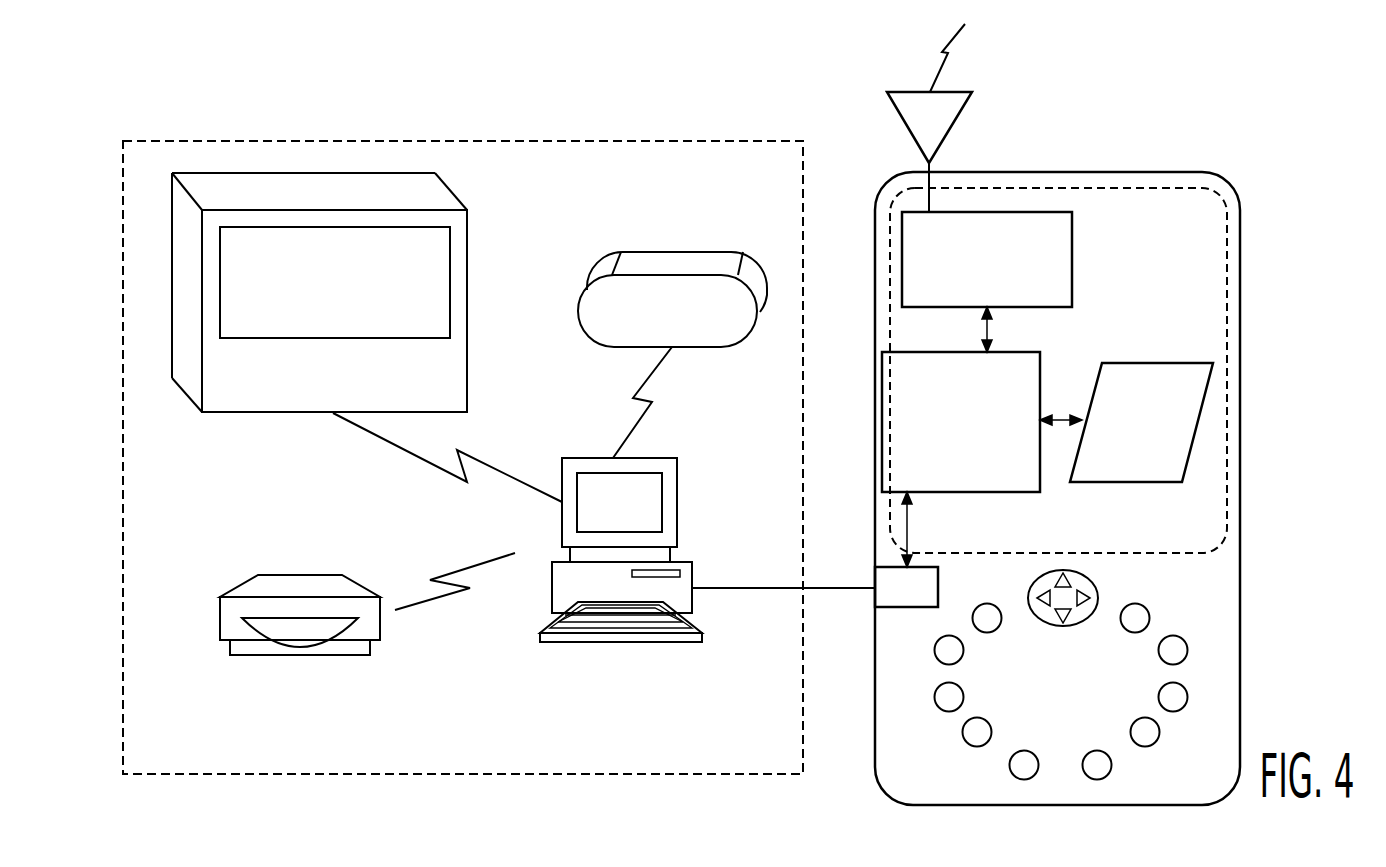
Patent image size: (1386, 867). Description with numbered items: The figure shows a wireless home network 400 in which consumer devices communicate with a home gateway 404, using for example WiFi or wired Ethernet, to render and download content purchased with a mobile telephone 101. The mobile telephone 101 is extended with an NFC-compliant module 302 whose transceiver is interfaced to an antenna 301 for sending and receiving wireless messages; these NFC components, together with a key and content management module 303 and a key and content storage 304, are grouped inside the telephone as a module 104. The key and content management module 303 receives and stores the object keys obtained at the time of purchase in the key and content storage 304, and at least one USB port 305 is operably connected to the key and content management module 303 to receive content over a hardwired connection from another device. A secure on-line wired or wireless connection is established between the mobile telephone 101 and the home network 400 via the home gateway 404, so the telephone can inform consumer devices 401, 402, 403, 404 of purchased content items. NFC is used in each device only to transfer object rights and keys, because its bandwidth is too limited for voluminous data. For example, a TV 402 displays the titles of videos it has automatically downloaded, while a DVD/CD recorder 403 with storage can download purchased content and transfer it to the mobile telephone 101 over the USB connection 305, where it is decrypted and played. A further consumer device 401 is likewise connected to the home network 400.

The mobile telephone 101 is at (1180, 776).
The communication module 104 is at (1227, 448).
The antenna 301 is at (911, 121).
The NFC-compliant module 302 is at (970, 293).
The key and content management module 303 is at (943, 481).
The key and content storage 304 is at (1120, 470).
The USB port 305 is at (833, 588).
The home network 400 is at (138, 752).
The consumer device 401 is at (650, 335).
The TV 402 is at (316, 398).
The DVD/CD recorder 403 is at (281, 691).
The home gateway 404 is at (605, 676).